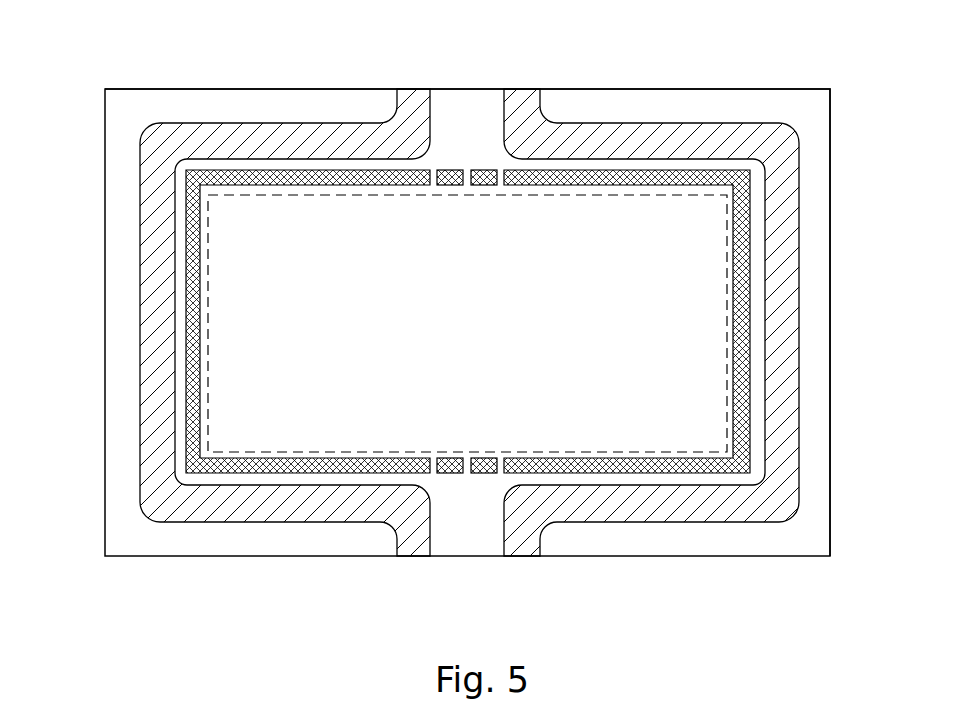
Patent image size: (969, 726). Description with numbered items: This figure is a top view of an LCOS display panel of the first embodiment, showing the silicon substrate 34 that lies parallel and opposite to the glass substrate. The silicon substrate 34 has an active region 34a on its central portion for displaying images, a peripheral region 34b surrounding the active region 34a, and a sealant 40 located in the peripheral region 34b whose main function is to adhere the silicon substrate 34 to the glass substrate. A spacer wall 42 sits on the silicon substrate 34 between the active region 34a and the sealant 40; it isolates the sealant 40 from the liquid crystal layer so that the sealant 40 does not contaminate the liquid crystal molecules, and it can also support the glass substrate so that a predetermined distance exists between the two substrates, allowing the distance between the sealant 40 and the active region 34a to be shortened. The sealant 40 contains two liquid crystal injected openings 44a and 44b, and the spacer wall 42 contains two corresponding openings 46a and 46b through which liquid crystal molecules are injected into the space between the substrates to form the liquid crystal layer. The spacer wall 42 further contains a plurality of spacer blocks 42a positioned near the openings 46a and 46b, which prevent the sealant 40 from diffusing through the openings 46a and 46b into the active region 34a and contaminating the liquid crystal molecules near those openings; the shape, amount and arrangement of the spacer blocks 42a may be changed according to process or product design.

The silicon substrate 34 is at (830, 500).
The active region 34a is at (652, 437).
The peripheral region 34b is at (800, 102).
The sealant 40 is at (152, 185).
The spacer wall 42 is at (267, 175).
The spacer blocks 42a is at (452, 178).
The liquid crystal injected opening 44a is at (430, 60).
The liquid crystal injected opening 44b is at (430, 593).
The opening 46a is at (431, 203).
The opening 46b is at (430, 442).